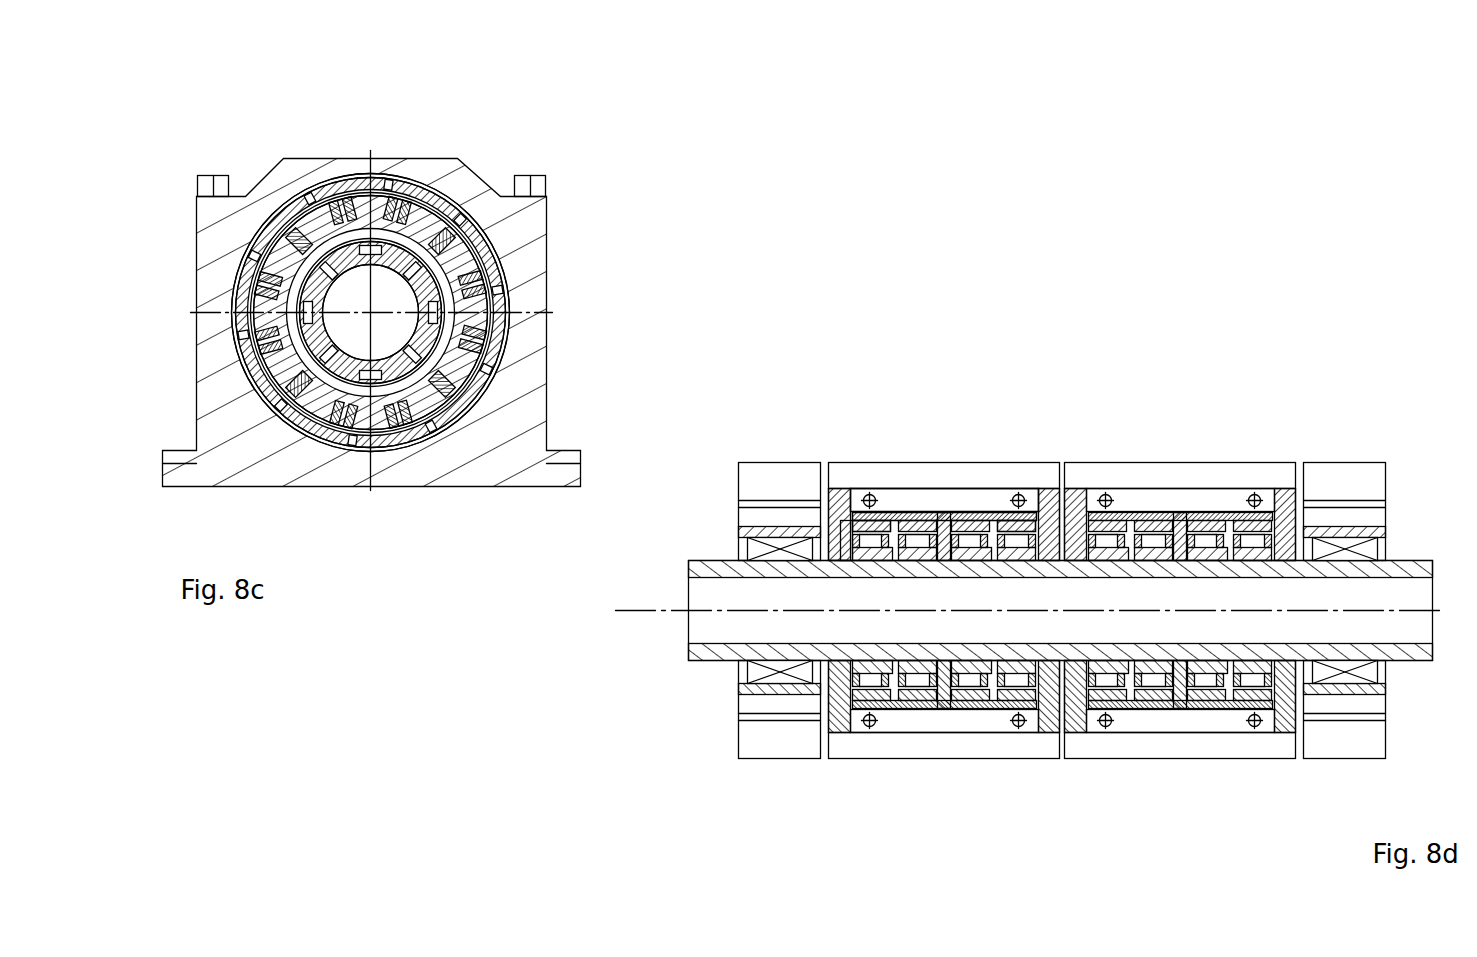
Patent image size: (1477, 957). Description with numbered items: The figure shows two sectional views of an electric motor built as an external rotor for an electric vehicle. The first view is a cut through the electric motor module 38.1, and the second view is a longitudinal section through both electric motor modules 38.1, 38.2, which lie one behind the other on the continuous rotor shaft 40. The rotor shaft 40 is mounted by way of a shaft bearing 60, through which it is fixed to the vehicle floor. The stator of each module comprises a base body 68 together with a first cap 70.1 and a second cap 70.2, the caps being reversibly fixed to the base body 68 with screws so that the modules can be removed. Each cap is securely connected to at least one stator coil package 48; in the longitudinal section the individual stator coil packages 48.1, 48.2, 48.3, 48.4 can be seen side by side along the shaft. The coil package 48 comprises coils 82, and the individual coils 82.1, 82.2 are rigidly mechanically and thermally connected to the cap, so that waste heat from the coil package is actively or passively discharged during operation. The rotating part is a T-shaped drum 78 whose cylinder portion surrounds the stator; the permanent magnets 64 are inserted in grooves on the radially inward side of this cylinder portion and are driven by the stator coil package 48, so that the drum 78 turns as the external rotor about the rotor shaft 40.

In FIG. 8d, the electric motor module 38.1 is at (942, 840).
In FIG. 8d, the electric motor module 38.2 is at (1169, 840).
In FIG. 8c, the rotor shaft 40 is at (470, 250).
In FIG. 8d, the rotor shaft 40 is at (718, 568).
In FIG. 8c, the stator coil package 48 is at (250, 368).
In FIG. 8d, the stator coil package 48.1 is at (868, 680).
In FIG. 8d, the stator coil package 48.2 is at (915, 680).
In FIG. 8d, the stator coil package 48.3 is at (970, 680).
In FIG. 8d, the stator coil package 48.4 is at (1015, 683).
In FIG. 8d, the shaft bearing 60 is at (755, 670).
In FIG. 8c, the permanent magnets 64 is at (413, 200).
In FIG. 8d, the permanent magnets 64 is at (997, 517).
In FIG. 8c, the base body 68 is at (520, 360).
In FIG. 8d, the base body 68 is at (992, 497).
In FIG. 8d, the first cap 70.1 is at (837, 512).
In FIG. 8d, the second cap 70.2 is at (1051, 506).
In FIG. 8c, the drum 78 is at (463, 212).
In FIG. 8d, the drum 78 is at (942, 523).
In FIG. 8d, the coil 82 is at (845, 535).
In FIG. 8c, the coil 82.1 is at (277, 232).
In FIG. 8c, the coil 82.2 is at (232, 318).